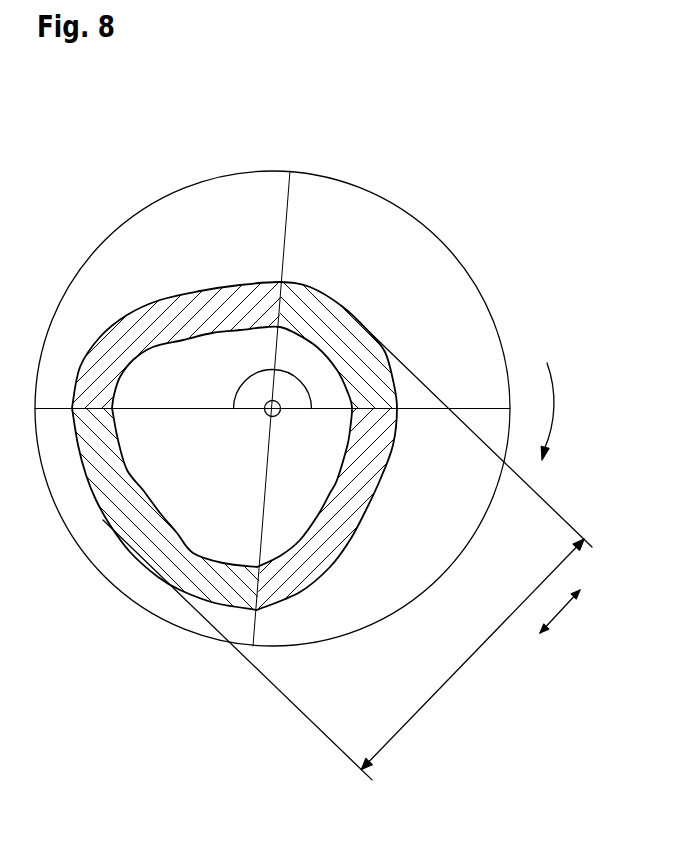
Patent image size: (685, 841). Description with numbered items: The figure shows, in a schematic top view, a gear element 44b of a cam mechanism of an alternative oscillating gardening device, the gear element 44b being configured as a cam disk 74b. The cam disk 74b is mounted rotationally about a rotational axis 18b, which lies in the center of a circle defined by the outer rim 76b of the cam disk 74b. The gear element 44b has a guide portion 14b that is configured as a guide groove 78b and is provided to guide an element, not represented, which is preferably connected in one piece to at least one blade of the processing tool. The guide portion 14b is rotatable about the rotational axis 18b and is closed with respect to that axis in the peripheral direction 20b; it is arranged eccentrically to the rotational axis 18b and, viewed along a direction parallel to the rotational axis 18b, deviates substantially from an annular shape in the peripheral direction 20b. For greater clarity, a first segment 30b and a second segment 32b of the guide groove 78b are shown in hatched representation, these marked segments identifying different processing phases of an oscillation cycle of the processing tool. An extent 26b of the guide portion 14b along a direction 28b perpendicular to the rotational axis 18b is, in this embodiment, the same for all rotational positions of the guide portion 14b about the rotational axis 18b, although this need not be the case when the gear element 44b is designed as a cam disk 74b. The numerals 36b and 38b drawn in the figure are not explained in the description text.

The guide portion 14b is at (113, 357).
The guide groove 78b is at (342, 370).
The central receptacle 38b is at (246, 378).
The second segment 32b is at (250, 307).
The gear element 44b is at (322, 200).
The cam disk 74b is at (272, 377).
The outer rim 76b is at (371, 181).
The first segment 30b is at (303, 308).
The bore 36b is at (292, 372).
The rotational axis 18b is at (281, 404).
The peripheral direction 20b is at (555, 407).
The extent 26b is at (460, 669).
The direction 28b is at (558, 615).